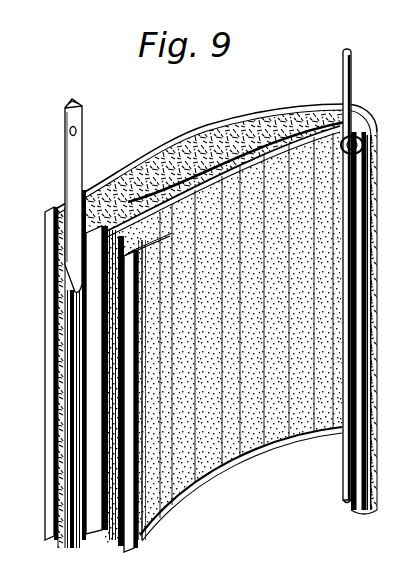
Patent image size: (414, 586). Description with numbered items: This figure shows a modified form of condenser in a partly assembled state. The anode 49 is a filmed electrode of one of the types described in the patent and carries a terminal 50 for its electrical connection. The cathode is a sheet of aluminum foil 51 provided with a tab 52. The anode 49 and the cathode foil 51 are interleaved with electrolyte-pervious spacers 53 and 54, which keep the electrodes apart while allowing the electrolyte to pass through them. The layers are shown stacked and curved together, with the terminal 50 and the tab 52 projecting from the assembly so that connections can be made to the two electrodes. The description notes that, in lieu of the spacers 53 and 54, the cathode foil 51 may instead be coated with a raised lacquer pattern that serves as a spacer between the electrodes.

The anode 49 is at (210, 456).
The terminal 50 is at (352, 74).
The cathode foil 51 is at (98, 514).
The tab 52 is at (66, 151).
The spacer 53 is at (130, 530).
The spacer 54 is at (70, 518).